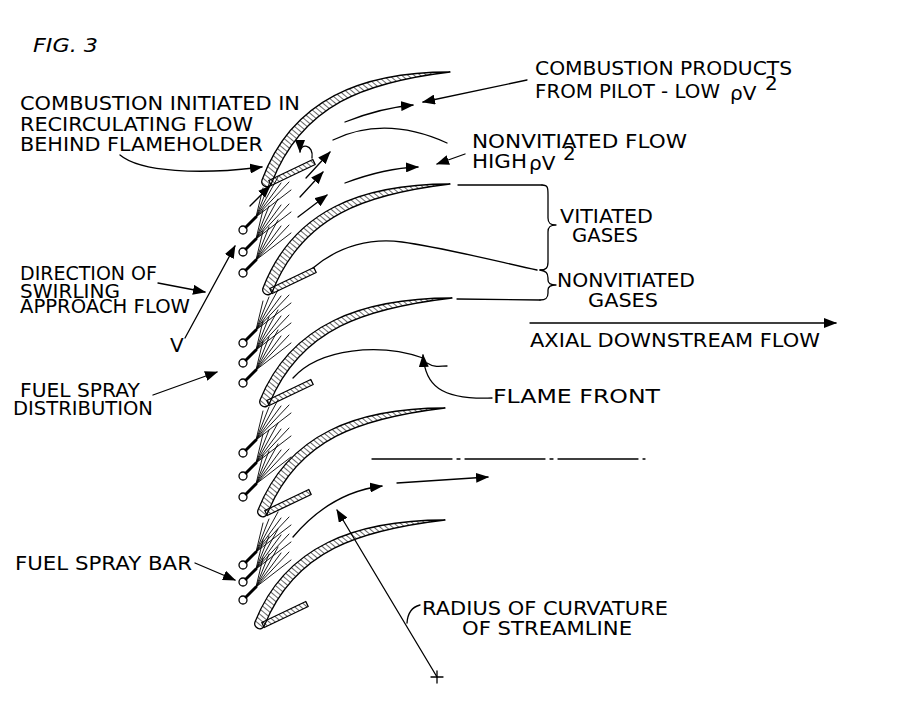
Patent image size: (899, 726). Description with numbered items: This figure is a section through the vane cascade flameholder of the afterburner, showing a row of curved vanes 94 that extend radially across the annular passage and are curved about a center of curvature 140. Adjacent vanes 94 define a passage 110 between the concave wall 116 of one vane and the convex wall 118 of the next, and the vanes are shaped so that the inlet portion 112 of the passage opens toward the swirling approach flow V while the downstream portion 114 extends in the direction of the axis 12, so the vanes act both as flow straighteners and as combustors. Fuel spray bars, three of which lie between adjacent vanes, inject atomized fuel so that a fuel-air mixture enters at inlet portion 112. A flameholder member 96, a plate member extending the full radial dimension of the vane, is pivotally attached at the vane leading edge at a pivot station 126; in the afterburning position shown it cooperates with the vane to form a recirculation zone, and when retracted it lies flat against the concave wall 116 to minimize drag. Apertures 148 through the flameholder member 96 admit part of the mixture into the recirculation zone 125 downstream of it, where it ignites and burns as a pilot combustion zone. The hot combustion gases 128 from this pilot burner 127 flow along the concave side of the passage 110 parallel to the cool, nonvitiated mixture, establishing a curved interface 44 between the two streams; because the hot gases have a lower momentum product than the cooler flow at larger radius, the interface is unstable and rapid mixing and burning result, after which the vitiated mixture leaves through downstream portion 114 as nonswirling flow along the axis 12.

The axis 12 is at (572, 460).
The interface 44 is at (402, 243).
The vane 94 is at (352, 341).
The flameholder member 96 is at (300, 603).
The passage 110 is at (410, 285).
The inlet portion 112 is at (263, 412).
The downstream portion 114 is at (432, 442).
The concave wall 116 is at (388, 302).
The convex wall 118 is at (323, 440).
The recirculation zone 125 is at (273, 157).
The pivot station 126 is at (263, 183).
The pilot burner 127 is at (413, 83).
The hot combustion gases 128 is at (355, 356).
The center of curvature 140 is at (443, 675).
The apertures 148 is at (288, 282).